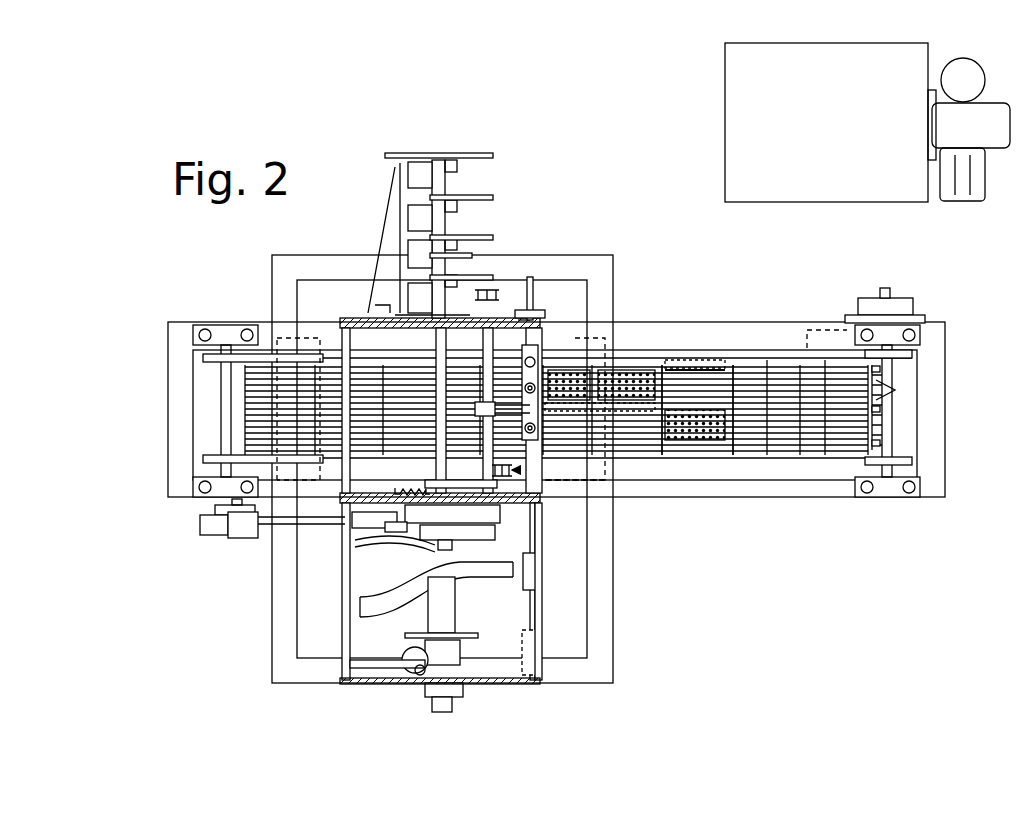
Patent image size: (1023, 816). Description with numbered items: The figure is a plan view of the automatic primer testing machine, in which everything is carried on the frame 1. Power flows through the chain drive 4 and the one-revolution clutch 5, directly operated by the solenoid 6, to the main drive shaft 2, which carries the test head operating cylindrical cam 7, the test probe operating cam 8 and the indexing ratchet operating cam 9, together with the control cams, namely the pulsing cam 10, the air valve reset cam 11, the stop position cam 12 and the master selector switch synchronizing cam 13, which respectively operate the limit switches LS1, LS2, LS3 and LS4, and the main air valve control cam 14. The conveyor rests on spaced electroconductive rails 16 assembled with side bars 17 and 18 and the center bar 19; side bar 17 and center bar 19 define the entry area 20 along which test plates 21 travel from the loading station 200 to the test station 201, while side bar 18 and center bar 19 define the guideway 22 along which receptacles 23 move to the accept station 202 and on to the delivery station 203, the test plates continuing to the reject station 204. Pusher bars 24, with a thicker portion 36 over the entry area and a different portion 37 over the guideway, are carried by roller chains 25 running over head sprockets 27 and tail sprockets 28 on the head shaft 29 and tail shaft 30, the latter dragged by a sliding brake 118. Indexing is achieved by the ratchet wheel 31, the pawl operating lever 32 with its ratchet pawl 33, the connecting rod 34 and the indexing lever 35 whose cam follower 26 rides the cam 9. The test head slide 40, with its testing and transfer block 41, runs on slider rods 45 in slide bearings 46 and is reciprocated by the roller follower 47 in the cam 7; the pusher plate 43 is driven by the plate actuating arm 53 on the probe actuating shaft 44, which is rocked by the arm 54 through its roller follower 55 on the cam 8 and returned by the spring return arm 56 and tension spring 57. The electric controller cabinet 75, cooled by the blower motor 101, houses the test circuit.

The frame 1 is at (182, 497).
The main drive shaft 2 is at (440, 183).
The chain drive 4 is at (480, 638).
The one-revolution clutch 5 is at (404, 660).
The solenoid 6 is at (415, 676).
The test head operating cylindrical cam 7 is at (358, 607).
The test probe operating cam 8 is at (395, 545).
The indexing ratchet operating cam 9 is at (370, 548).
The pulsing cam 10 is at (486, 277).
The air valve reset cam 11 is at (462, 235).
The stop position cam 12 is at (480, 195).
The master selector switch synchronizing cam 13 is at (475, 153).
The main air valve control cam 14 is at (470, 255).
The electroconductive rails 16 is at (895, 388).
The side bar 17 is at (878, 370).
The side bar 18 is at (878, 442).
The center bar 19 is at (878, 407).
The entry area 20 is at (690, 380).
The test plates 21 is at (630, 372).
The guideway 22 is at (630, 428).
The receptacles 23 is at (690, 440).
The pusher bars 24 is at (725, 370).
The roller chains 25 is at (767, 360).
The roller type cam follower 26 is at (420, 538).
The head sprocket 27 is at (230, 356).
The tail sprocket 28 is at (900, 354).
The head shaft 29 is at (230, 434).
The tail shaft 30 is at (887, 290).
The chain indexing ratchet wheel 31 is at (215, 512).
The pawl operating lever 32 is at (220, 535).
The ratchet pawl 33 is at (240, 538).
The chain indexing connecting rod 34 is at (265, 525).
The indexing lever 35 is at (395, 530).
The pusher bar portion spanning entry area 36 is at (735, 365).
The pusher bar portion spanning receptacle guideway 37 is at (735, 433).
The test head slide 40 is at (530, 358).
The testing and transfer block 41 is at (560, 360).
The pusher plate 43 is at (535, 440).
The probe actuating shaft 44 is at (485, 345).
The slider rods 45 is at (533, 300).
The slide bearings 46 is at (548, 318).
The roller follower 47 is at (510, 572).
The plate actuating arm 53 is at (505, 318).
The arm 54 is at (470, 540).
The roller follower 55 is at (430, 547).
The spring return arm 56 is at (470, 510).
The tension spring 57 is at (398, 488).
The electric controller cabinet 75 is at (825, 203).
The blower motor 101 is at (980, 203).
The sliding brake 118 is at (898, 305).
The loading station 200 is at (812, 330).
The test station 201 is at (597, 335).
The accept station 202 is at (578, 482).
The delivery station 203 is at (290, 490).
The reject station 204 is at (292, 335).
The limit switch LS1 is at (418, 297).
The limit switch LS2 is at (418, 250).
The limit switch LS3 is at (418, 217).
The limit switch LS4 is at (418, 170).